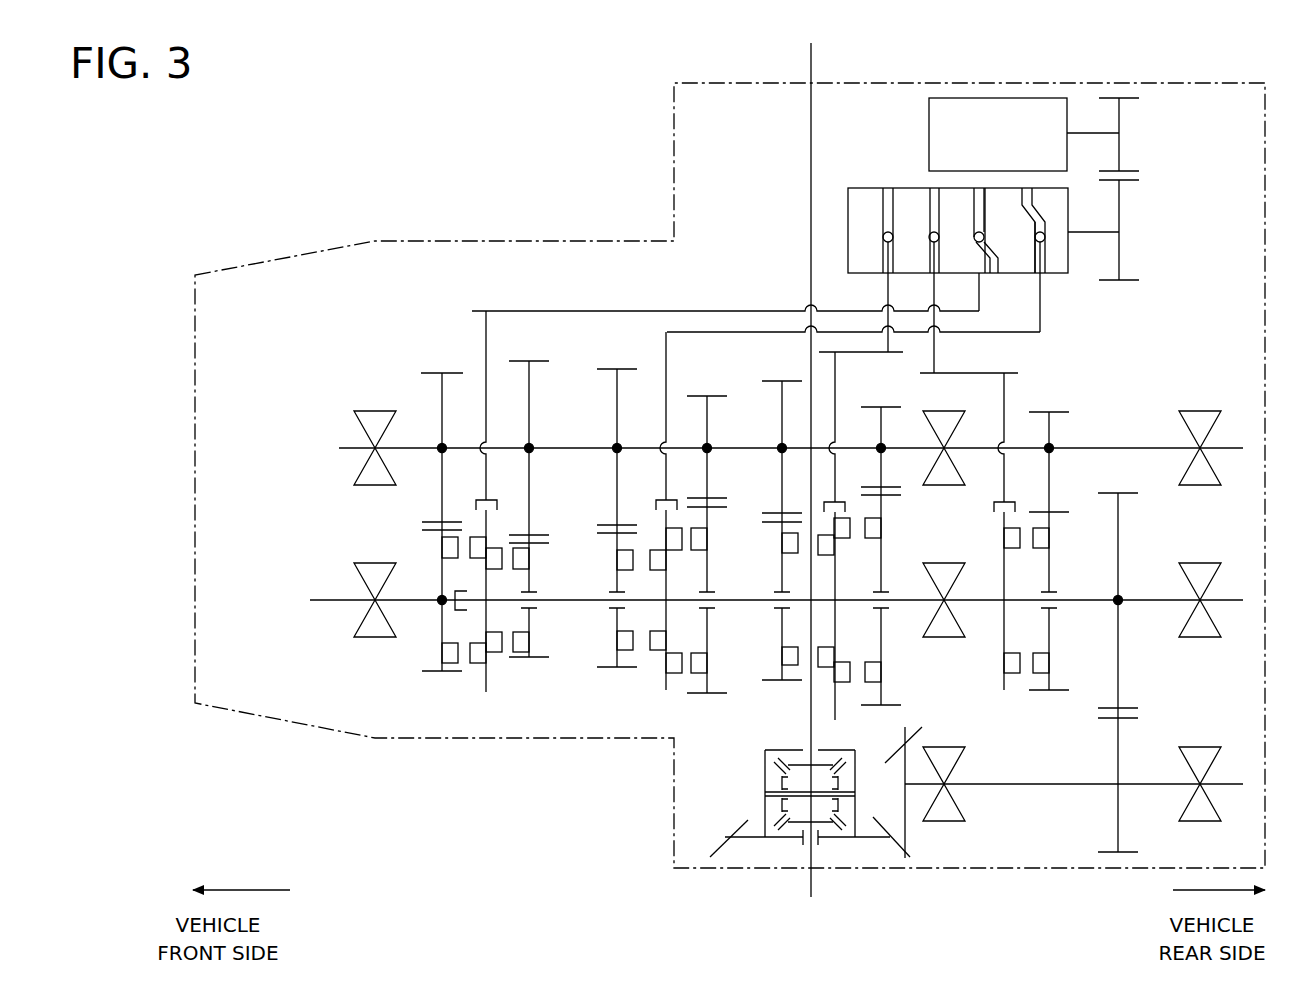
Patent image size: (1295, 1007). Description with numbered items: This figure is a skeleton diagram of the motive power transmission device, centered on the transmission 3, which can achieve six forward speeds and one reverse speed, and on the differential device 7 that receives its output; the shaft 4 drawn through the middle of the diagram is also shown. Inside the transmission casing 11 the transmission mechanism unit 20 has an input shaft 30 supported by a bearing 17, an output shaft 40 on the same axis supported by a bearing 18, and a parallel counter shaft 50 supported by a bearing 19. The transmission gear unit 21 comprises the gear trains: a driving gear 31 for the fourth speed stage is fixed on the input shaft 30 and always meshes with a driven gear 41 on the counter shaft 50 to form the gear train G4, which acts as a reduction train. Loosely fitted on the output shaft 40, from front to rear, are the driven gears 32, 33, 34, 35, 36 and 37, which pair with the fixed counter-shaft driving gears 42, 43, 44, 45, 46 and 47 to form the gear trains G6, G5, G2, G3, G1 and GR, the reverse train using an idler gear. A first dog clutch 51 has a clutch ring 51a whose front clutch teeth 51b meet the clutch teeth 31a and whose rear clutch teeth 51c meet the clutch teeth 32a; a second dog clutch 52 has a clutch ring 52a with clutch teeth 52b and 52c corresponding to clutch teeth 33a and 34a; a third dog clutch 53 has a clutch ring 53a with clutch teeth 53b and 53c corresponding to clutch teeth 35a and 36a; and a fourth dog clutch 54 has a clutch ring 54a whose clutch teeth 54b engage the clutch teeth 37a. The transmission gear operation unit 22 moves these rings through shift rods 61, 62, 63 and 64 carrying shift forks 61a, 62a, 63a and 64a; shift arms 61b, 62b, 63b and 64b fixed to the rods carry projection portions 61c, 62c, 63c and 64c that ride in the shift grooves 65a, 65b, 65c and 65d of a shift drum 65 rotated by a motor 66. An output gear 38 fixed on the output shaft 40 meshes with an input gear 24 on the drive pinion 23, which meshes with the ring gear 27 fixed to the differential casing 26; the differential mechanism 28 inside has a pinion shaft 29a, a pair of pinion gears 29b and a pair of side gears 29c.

The transmission 3 is at (497, 217).
The input shaft 4 is at (814, 52).
The differential device 7 is at (750, 845).
The transmission casing 11 is at (385, 241).
The bearing 17 is at (375, 637).
The bearing 18 is at (955, 638).
The bearing 19 is at (375, 485).
The transmission mechanism unit 20 is at (322, 355).
The transmission gear unit 21 is at (397, 682).
The transmission gear operation unit 22 is at (428, 303).
The drive pinion 23 is at (920, 830).
The input gear 24 is at (1112, 853).
The differential casing 26 is at (857, 770).
The ring gear 27 is at (898, 852).
The differential mechanism 28 is at (770, 855).
The pinion shaft 29a is at (778, 785).
The pinion gears 29b is at (778, 805).
The side gears 29c is at (790, 823).
The input shaft 30 is at (340, 600).
The driving gear for fourth speed stage 31 is at (435, 672).
The clutch teeth 31a is at (455, 645).
The driven gear for sixth speed stage 32 is at (535, 658).
The clutch teeth 32a is at (529, 634).
The driven gear for fifth speed stage 33 is at (615, 668).
The clutch teeth 33a is at (633, 641).
The driven gear for second speed stage 34 is at (707, 694).
The clutch teeth 34a is at (700, 676).
The driven gear for third speed stage 35 is at (770, 681).
The clutch teeth 35a is at (795, 680).
The driven gear for first speed stage 36 is at (880, 706).
The clutch teeth 36a is at (881, 690).
The driven gear for reverse speed stage 37 is at (1040, 700).
The clutch teeth 37a is at (1030, 690).
The output gear 38 is at (1130, 708).
The output shaft 40 is at (1225, 600).
The driven gear for fourth speed stage 41 is at (440, 373).
The driving gear for sixth speed stage 42 is at (537, 361).
The driving gear for fifth speed stage 43 is at (618, 369).
The driving gear for second speed stage 44 is at (707, 396).
The driving gear for third speed stage 45 is at (778, 381).
The driving gear for first speed stage 46 is at (880, 407).
The driving gear for reverse speed stage 47 is at (1055, 412).
The counter shaft 50 is at (352, 450).
The first dog clutch 51 is at (505, 500).
The clutch ring 51a is at (486, 527).
The clutch teeth 51b is at (478, 665).
The clutch teeth 51c is at (500, 655).
The second dog clutch 52 is at (680, 525).
The clutch ring 52a is at (666, 527).
The clutch teeth 52b is at (660, 655).
The clutch teeth 52c is at (682, 655).
The third dog clutch 53 is at (842, 550).
The clutch ring 53a is at (822, 690).
The clutch teeth 53b is at (828, 650).
The clutch teeth 53c is at (850, 664).
The fourth dog clutch 54 is at (997, 550).
The clutch ring 54a is at (1002, 528).
The clutch teeth 54b is at (1010, 653).
The first shift rod 61 is at (515, 311).
The first shift fork 61a is at (484, 500).
The first shift arm 61b is at (980, 290).
The projection portion 61c is at (990, 262).
The second shift rod 62 is at (895, 353).
The second shift fork 62a is at (840, 502).
The second shift arm 62b is at (888, 292).
The projection portion 62c is at (883, 237).
The third shift rod 63 is at (958, 372).
The third shift fork 63a is at (1010, 502).
The third shift arm 63b is at (934, 295).
The projection portion 63c is at (930, 235).
The fourth shift rod 64 is at (1042, 332).
The fourth shift fork 64a is at (677, 500).
The fourth shift arm 64b is at (1042, 297).
The projection portion 64c is at (1068, 232).
The shift drum 65 is at (848, 188).
The first shift groove 65a is at (978, 188).
The second shift groove 65b is at (887, 188).
The third shift groove 65c is at (934, 188).
The fourth shift groove 65d is at (1027, 188).
The motor 66 is at (975, 98).
The gear train for first speed stage G1 is at (912, 702).
The gear train for second speed stage G2 is at (707, 752).
The gear train for third speed stage G3 is at (781, 305).
The gear train for fourth speed stage G4 is at (440, 752).
The gear train for fifth speed stage G5 is at (615, 752).
The gear train for sixth speed stage G6 is at (528, 752).
The gear train for reverse speed stage GR is at (1048, 712).